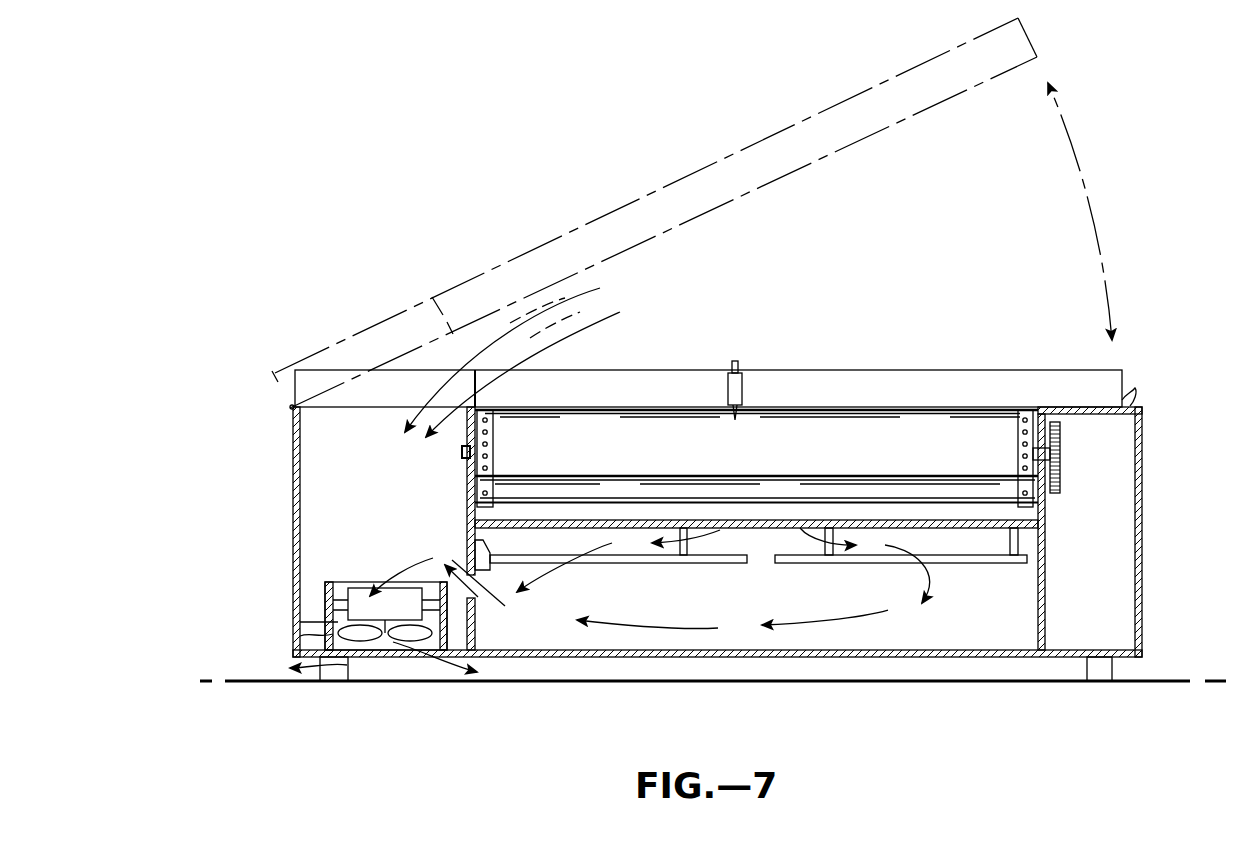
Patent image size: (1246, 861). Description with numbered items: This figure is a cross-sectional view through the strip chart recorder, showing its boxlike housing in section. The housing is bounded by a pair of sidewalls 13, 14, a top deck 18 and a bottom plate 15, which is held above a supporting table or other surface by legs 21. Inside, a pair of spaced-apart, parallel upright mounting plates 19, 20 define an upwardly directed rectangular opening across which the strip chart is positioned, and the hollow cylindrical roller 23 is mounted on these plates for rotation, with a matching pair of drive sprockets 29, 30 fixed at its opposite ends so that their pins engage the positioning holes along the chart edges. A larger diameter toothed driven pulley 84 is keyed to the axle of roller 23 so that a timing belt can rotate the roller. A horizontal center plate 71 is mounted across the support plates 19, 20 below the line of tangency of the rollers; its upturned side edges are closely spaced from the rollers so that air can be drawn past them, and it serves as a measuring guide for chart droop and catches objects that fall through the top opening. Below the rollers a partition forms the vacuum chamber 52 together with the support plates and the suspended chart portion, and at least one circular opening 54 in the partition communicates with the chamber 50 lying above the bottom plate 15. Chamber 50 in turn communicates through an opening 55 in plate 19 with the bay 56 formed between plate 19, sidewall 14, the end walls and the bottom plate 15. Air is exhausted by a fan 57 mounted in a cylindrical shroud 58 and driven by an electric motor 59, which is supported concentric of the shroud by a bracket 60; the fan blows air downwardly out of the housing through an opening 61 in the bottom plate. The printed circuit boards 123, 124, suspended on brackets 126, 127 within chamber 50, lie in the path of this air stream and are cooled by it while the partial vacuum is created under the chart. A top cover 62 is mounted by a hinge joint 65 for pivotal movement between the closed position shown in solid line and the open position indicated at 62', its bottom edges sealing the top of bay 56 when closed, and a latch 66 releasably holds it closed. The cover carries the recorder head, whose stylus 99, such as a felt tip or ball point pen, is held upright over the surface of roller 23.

The sidewall 13 is at (1142, 496).
The sidewall 14 is at (293, 498).
The bottom plate 15 is at (778, 657).
The top deck 18 is at (1142, 407).
The mounting plate 19 is at (467, 523).
The mounting plate 20 is at (1045, 598).
The legs 21 is at (322, 672).
The roller 23 is at (812, 420).
The drive sprocket 29 is at (494, 456).
The drive sprocket 30 is at (1018, 441).
The chamber 50 is at (755, 621).
The vacuum chamber 52 is at (768, 524).
The circular opening 54 is at (812, 526).
The opening 55 is at (490, 598).
The bay 56 is at (398, 504).
The fan 57 is at (300, 622).
The cylindrical shroud 58 is at (300, 636).
The electric motor 59 is at (368, 588).
The bracket 60 is at (338, 598).
The opening 61 is at (432, 668).
The top cover 62 is at (708, 360).
The open position of top cover 62' is at (692, 213).
The hinge joint 65 is at (290, 408).
The latch 66 is at (1132, 392).
The center plate 71 is at (853, 480).
The driven pulley 84 is at (1060, 440).
The stylus 99 is at (740, 364).
The printed circuit board 123 is at (628, 563).
The printed circuit board 124 is at (898, 563).
The bracket 126 is at (700, 563).
The bracket 127 is at (818, 565).